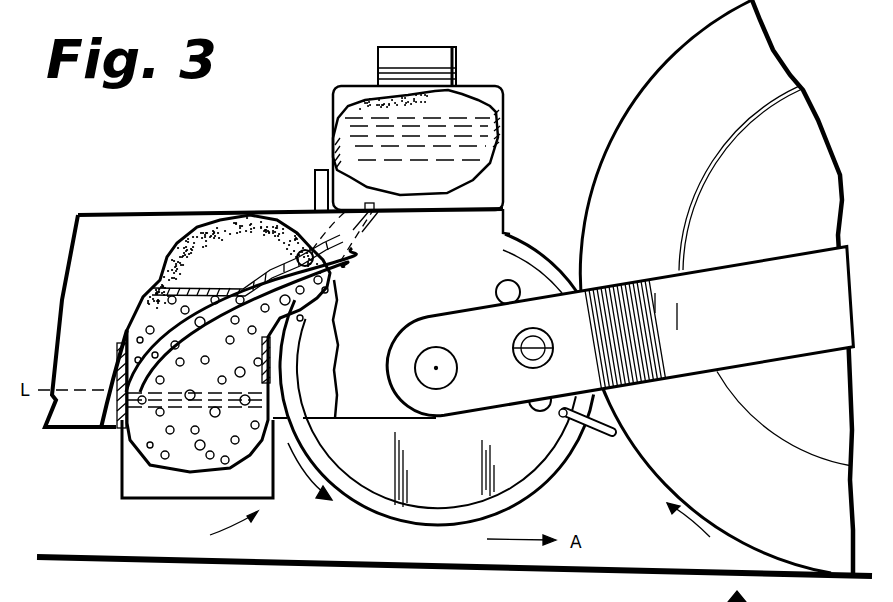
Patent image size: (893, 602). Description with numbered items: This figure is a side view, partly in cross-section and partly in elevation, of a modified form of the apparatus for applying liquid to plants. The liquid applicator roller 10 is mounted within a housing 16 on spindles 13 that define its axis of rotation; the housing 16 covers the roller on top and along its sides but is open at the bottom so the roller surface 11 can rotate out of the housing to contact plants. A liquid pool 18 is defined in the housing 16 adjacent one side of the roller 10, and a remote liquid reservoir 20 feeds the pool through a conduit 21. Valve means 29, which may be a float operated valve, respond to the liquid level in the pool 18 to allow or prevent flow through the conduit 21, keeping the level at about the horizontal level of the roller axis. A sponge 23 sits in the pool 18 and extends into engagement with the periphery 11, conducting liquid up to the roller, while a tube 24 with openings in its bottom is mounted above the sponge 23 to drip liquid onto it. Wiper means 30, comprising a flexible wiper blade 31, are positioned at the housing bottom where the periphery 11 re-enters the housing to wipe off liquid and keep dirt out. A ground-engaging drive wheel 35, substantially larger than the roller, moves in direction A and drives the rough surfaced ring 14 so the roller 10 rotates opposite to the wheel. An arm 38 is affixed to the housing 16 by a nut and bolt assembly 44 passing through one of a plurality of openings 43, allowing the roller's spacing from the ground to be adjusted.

The liquid applicator roller 10 is at (224, 525).
The roller surface 11 is at (527, 478).
The spindle 13 is at (445, 350).
The rough surfaced ring 14 is at (437, 425).
The housing 16 is at (515, 231).
The liquid pool 18 is at (106, 455).
The remote liquid reservoir 20 is at (503, 138).
The conduit 21 is at (300, 277).
The sponge 23 is at (235, 330).
The tube 24 is at (292, 259).
The valve means 29 is at (108, 378).
The wiper means 30 is at (588, 452).
The wiper blade 31 is at (560, 416).
The drive wheel 35 is at (622, 133).
The arm 38 is at (778, 277).
The opening 43 is at (500, 284).
The nut and bolt assembly 44 is at (513, 347).